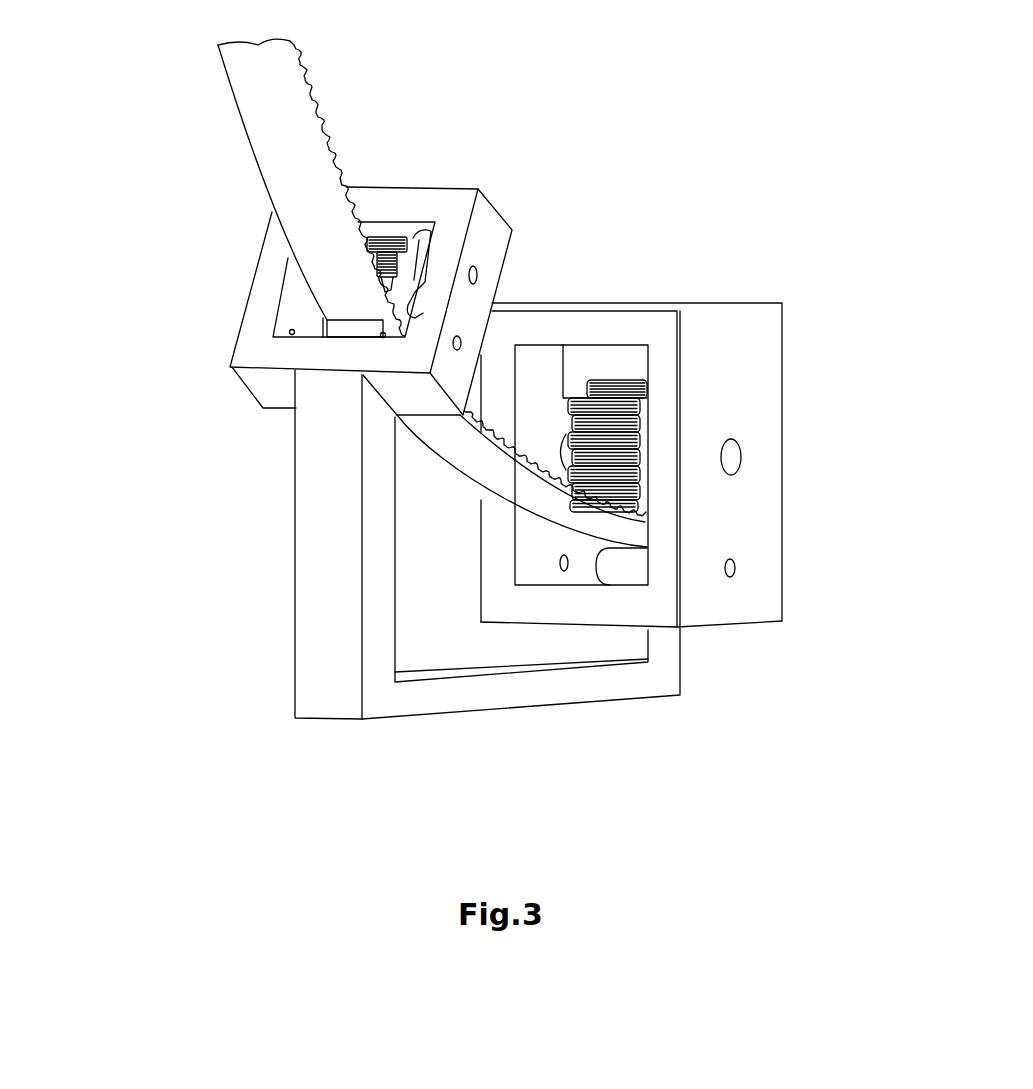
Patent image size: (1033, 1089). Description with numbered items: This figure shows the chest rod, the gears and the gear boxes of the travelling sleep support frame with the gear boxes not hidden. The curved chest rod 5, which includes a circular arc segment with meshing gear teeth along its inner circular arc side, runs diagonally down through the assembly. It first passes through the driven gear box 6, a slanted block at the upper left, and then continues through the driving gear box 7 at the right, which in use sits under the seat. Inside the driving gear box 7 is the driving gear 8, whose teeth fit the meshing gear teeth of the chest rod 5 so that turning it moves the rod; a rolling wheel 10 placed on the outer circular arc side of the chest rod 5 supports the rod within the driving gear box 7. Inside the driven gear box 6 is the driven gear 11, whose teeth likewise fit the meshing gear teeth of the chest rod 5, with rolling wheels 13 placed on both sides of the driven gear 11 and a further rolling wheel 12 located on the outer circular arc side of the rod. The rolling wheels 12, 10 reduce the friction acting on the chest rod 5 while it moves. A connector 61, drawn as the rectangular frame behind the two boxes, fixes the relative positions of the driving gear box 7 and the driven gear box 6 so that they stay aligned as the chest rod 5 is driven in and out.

The chest rod 5 is at (256, 131).
The driven gear box 6 is at (265, 339).
The driving gear box 7 is at (743, 355).
The driving gear 8 is at (611, 398).
The rolling wheel 10 is at (613, 567).
The driven gear 11 is at (382, 243).
The rolling wheel 12 is at (338, 332).
The rolling wheels 13 is at (420, 252).
The connector 61 is at (327, 610).